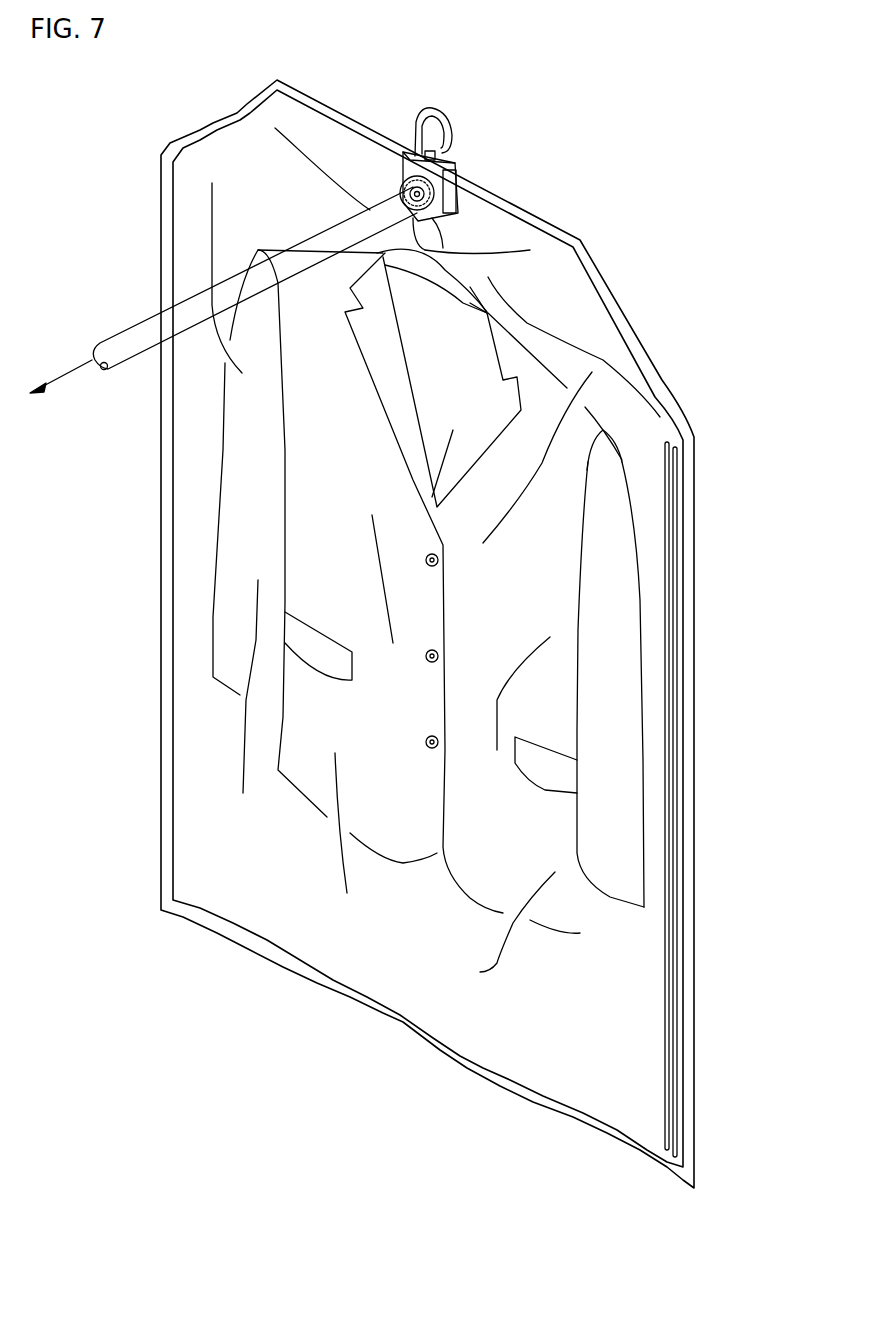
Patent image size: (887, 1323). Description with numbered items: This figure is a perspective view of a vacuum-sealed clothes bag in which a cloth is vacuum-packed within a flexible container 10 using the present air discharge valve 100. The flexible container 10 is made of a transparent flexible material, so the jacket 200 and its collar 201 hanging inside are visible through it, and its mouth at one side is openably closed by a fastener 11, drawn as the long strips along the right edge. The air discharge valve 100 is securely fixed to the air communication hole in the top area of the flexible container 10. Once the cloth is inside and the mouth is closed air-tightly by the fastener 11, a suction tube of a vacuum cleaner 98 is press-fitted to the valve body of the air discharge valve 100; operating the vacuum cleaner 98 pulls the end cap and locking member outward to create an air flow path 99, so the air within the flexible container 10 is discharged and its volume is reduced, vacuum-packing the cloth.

The flexible container 10 is at (643, 352).
The fastener 11 is at (670, 637).
The vacuum cleaner 98 is at (130, 333).
The air flow path 99 is at (100, 369).
The air discharge valve 100 is at (472, 149).
The jacket 200 is at (535, 247).
The collar 201 is at (515, 360).